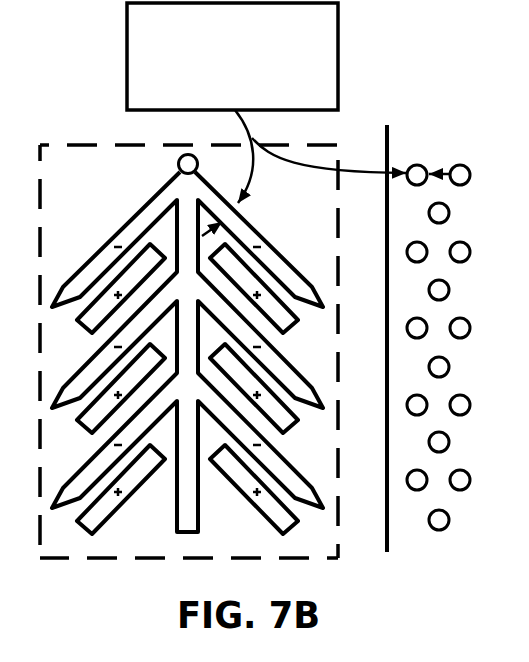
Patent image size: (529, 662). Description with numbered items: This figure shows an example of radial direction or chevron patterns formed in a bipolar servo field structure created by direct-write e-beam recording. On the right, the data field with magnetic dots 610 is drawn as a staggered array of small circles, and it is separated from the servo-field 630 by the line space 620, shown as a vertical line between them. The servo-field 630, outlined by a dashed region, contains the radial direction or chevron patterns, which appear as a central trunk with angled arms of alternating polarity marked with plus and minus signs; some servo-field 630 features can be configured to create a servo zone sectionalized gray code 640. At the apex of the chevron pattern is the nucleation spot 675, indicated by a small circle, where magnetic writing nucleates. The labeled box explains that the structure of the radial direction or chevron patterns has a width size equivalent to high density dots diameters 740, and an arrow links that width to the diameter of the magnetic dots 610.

The magnetic dots 610 is at (414, 137).
The line space 620 is at (385, 137).
The servo-field 630 is at (78, 222).
The servo zone sectionalized gray code 640 is at (103, 559).
The nucleation spot 675 is at (186, 168).
The width size equivalent to high density dots diameters 740 is at (138, 58).